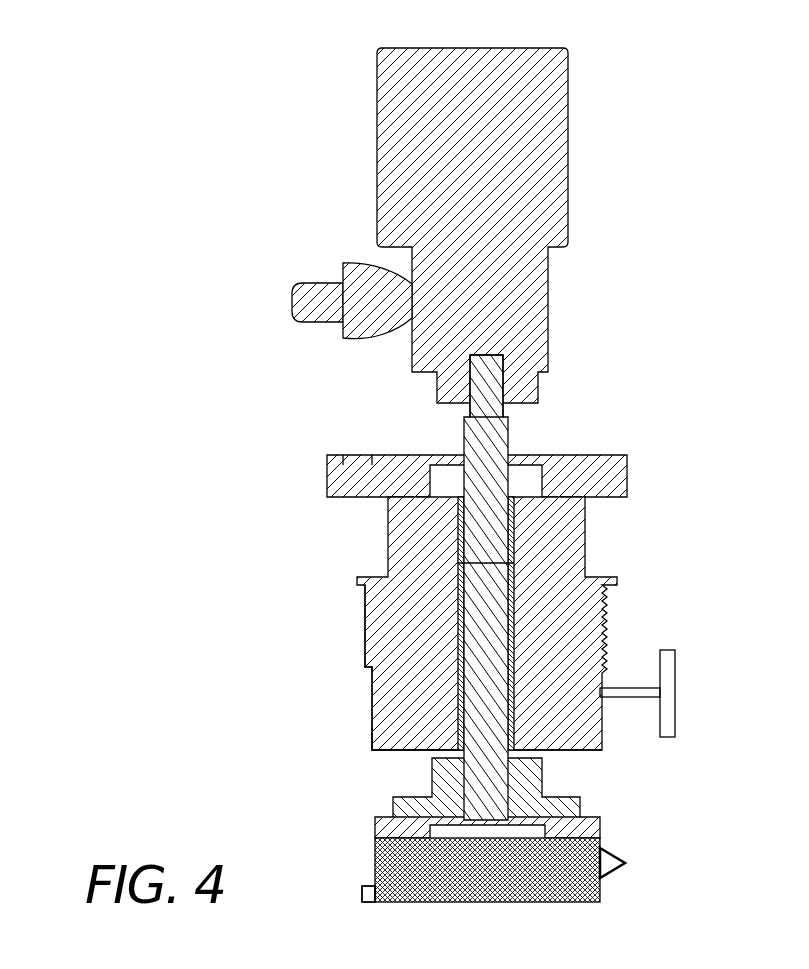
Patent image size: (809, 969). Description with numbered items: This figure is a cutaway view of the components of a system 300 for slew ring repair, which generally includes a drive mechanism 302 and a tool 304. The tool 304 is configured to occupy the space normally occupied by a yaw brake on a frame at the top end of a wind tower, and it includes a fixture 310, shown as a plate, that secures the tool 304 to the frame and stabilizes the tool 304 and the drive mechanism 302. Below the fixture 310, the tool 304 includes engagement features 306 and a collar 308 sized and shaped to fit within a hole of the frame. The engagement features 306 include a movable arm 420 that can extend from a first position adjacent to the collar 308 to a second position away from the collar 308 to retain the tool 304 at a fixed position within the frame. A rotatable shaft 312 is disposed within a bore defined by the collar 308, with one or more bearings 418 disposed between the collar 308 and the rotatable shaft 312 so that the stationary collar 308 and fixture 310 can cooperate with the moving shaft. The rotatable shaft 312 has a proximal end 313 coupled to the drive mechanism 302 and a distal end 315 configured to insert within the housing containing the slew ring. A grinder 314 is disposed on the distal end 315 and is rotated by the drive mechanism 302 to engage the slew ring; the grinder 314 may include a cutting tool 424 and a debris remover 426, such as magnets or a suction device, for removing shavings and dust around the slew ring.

The system 300 is at (294, 53).
The drive mechanism 302 is at (578, 144).
The tool 304 is at (636, 544).
The engagement features 306 is at (366, 626).
The collar 308 is at (372, 728).
The fixture 310 is at (628, 485).
The rotatable shaft 312 is at (510, 441).
The proximal end 313 is at (435, 436).
The grinder 314 is at (377, 866).
The distal end 315 is at (370, 781).
The bearings 418 is at (456, 634).
The movable arm 420 is at (668, 697).
The cutting tool 424 is at (624, 862).
The debris remover 426 is at (362, 894).